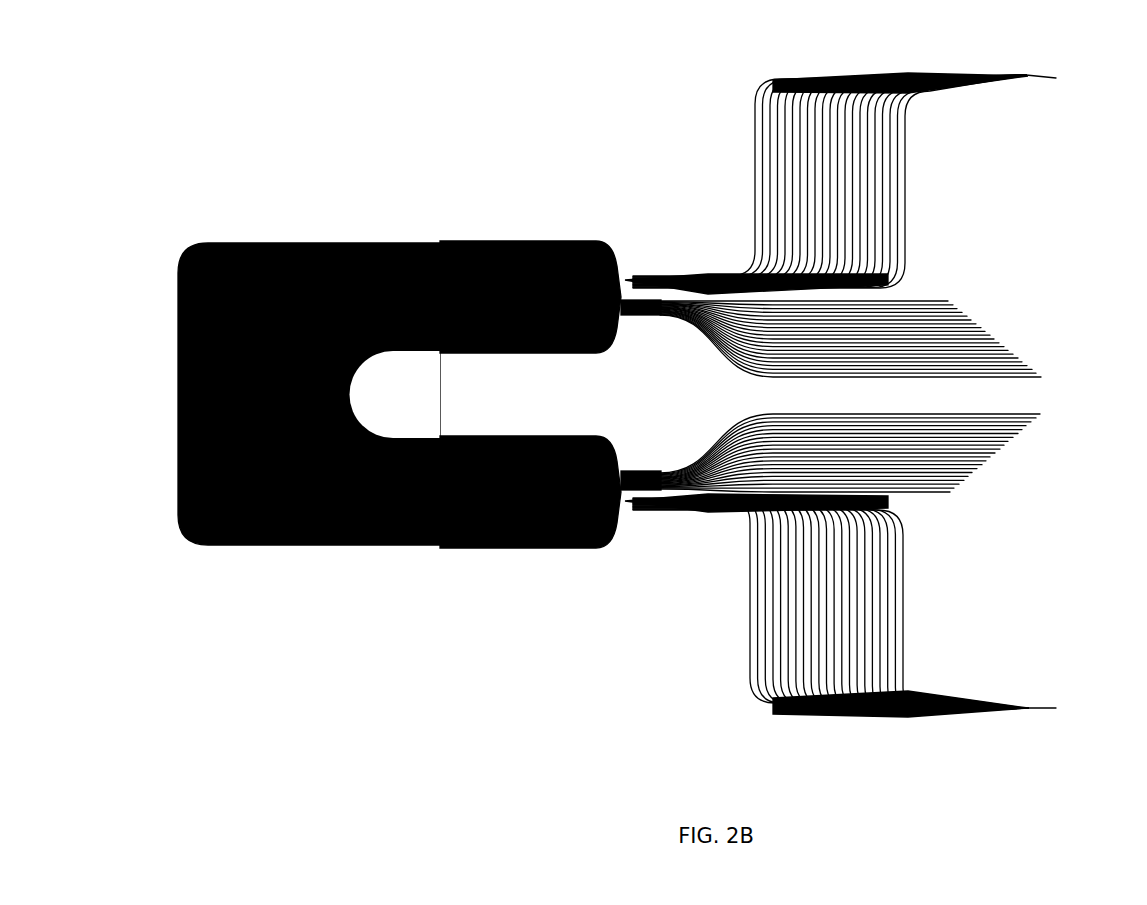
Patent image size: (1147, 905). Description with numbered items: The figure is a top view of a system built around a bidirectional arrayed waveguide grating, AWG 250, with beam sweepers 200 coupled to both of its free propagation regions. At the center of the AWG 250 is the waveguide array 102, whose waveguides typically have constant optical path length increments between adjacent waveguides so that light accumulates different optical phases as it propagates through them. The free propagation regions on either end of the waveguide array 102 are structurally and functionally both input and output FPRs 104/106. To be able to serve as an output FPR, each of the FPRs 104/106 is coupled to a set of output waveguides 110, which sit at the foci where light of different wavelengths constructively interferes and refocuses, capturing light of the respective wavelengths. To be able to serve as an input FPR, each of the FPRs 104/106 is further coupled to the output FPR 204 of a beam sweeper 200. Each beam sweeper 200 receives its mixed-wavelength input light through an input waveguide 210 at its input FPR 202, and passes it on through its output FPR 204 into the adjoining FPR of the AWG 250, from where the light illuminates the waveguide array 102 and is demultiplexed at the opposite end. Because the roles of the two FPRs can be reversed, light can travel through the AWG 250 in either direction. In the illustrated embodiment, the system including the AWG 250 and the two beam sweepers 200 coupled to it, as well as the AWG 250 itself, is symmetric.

The array of waveguides 102 is at (165, 390).
The bidirectional AWG 250 is at (171, 223).
The input/output FPR 104 is at (517, 345).
The input/output FPR 106 is at (524, 541).
The output waveguides 110 is at (930, 289).
The beam sweeper 200 is at (615, 77).
The output FPR of beam sweeper 204 is at (633, 270).
The input FPR of beam sweeper 202 is at (996, 80).
The input waveguide 210 is at (1030, 70).